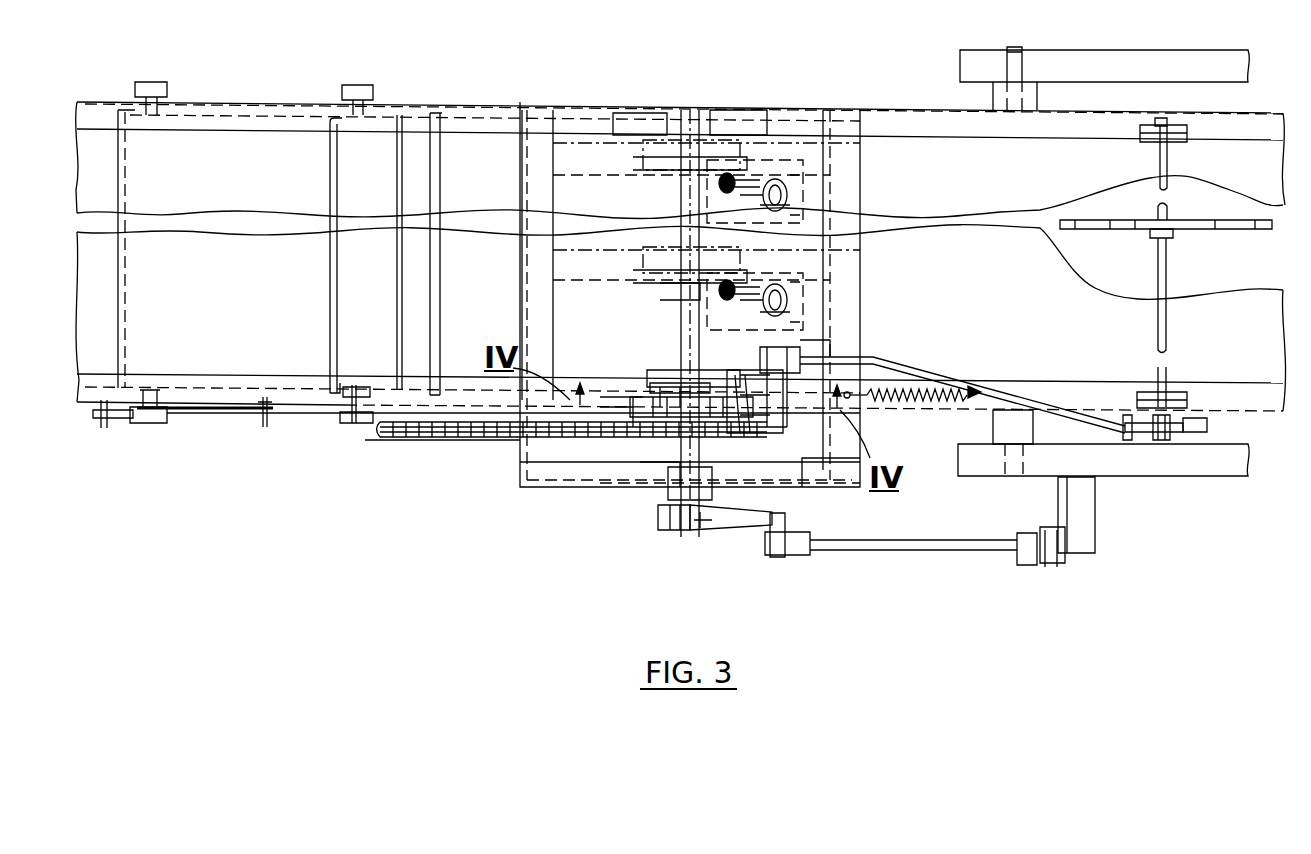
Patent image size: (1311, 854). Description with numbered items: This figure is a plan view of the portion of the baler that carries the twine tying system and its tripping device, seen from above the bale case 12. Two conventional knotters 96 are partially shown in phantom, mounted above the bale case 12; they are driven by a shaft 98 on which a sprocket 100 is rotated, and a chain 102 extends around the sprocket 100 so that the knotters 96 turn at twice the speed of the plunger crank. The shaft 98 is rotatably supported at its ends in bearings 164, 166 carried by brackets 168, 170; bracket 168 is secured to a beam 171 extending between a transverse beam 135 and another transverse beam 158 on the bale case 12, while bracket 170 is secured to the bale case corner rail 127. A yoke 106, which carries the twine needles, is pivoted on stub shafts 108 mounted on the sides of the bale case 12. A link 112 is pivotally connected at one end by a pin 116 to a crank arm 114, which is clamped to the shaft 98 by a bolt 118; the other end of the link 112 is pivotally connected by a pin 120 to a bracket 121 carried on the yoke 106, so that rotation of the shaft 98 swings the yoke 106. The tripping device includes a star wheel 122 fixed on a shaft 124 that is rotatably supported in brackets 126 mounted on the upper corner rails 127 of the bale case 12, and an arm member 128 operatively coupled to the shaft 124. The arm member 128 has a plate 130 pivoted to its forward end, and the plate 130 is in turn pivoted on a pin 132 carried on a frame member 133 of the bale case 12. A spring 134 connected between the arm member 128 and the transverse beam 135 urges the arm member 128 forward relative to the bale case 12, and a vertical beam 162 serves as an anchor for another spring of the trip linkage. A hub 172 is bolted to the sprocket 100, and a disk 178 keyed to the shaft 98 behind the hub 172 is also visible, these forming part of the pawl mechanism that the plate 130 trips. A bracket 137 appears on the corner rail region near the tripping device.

The bale case 12 is at (880, 112).
The knotters 96 is at (800, 203).
The shaft 98 is at (687, 302).
The sprocket 100 is at (630, 437).
The chain 102 is at (470, 440).
The yoke 106 is at (1140, 62).
The stub shafts 108 is at (1020, 42).
The link 112 is at (917, 550).
The crank arm 114 is at (733, 520).
The pin 116 is at (782, 555).
The bolt 118 is at (700, 533).
The pin 120 is at (1050, 565).
The bracket 121 is at (1085, 518).
The star wheel 122 is at (1230, 232).
The shaft 124 is at (1165, 318).
The brackets 126 is at (1180, 135).
The upper corner rails 127 is at (1230, 130).
The arm member 128 is at (1010, 397).
The plate 130 is at (753, 367).
The pin 132 is at (780, 353).
The frame member 133 is at (840, 360).
The spring 134 is at (930, 403).
The transverse beam 135 is at (813, 343).
The pivot mount 137 is at (1210, 428).
The transverse beam 158 is at (533, 323).
The vertical beam 162 is at (832, 466).
The bearing 164 is at (657, 493).
The bearing 166 is at (703, 112).
The bracket 168 is at (620, 488).
The bracket 170 is at (752, 125).
The beam 171 is at (610, 490).
The hub 172 is at (762, 395).
The disk 178 is at (667, 370).